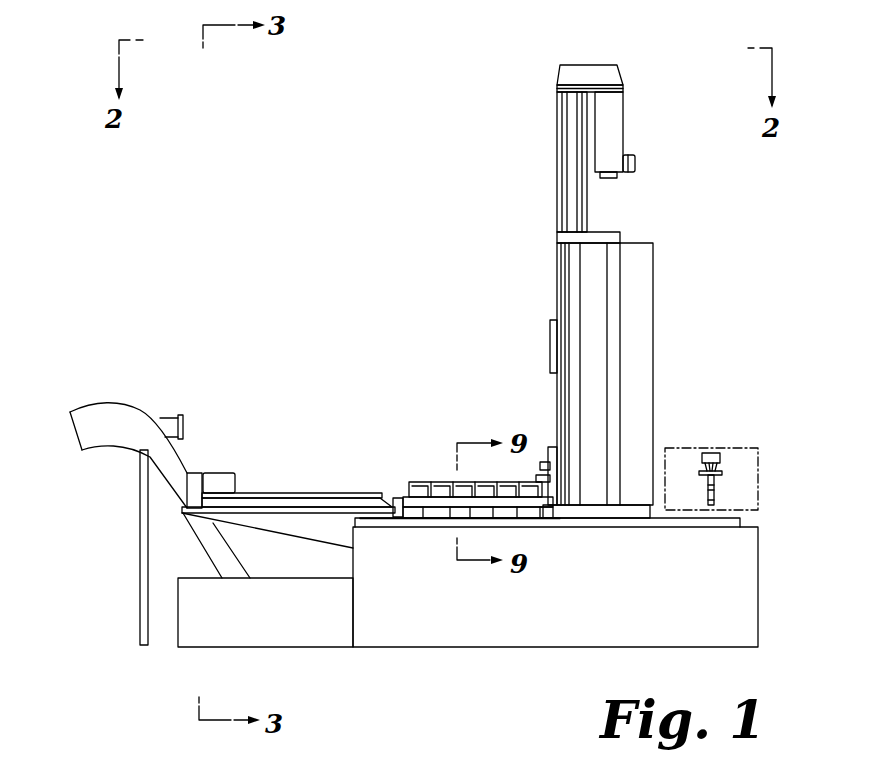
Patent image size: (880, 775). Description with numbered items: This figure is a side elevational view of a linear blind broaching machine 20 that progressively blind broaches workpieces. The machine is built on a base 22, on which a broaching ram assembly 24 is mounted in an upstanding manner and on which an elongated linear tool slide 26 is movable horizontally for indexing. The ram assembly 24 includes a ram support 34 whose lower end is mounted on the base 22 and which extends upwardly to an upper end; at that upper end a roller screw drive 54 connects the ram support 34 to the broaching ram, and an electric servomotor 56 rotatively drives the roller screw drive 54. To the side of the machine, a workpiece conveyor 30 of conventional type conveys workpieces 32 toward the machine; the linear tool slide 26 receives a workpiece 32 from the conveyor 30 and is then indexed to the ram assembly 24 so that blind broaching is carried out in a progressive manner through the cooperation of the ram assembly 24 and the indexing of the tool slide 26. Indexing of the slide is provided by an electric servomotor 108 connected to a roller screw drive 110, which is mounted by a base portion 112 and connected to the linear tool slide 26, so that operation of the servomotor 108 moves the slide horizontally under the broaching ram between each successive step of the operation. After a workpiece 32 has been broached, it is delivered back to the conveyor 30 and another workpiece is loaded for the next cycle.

The linear blind broaching machine 20 is at (480, 247).
The base 22 is at (508, 608).
The broaching ram assembly 24 is at (694, 273).
The linear tool slide 26 is at (421, 466).
The workpiece conveyor 30 is at (760, 470).
The workpiece 32 is at (722, 472).
The ram support 34 is at (645, 315).
The roller screw drive 54 is at (575, 138).
The electric servomotor 56 is at (588, 68).
The electric servomotor 108 is at (221, 481).
The roller screw drive 110 is at (300, 493).
The base portion 112 is at (384, 497).